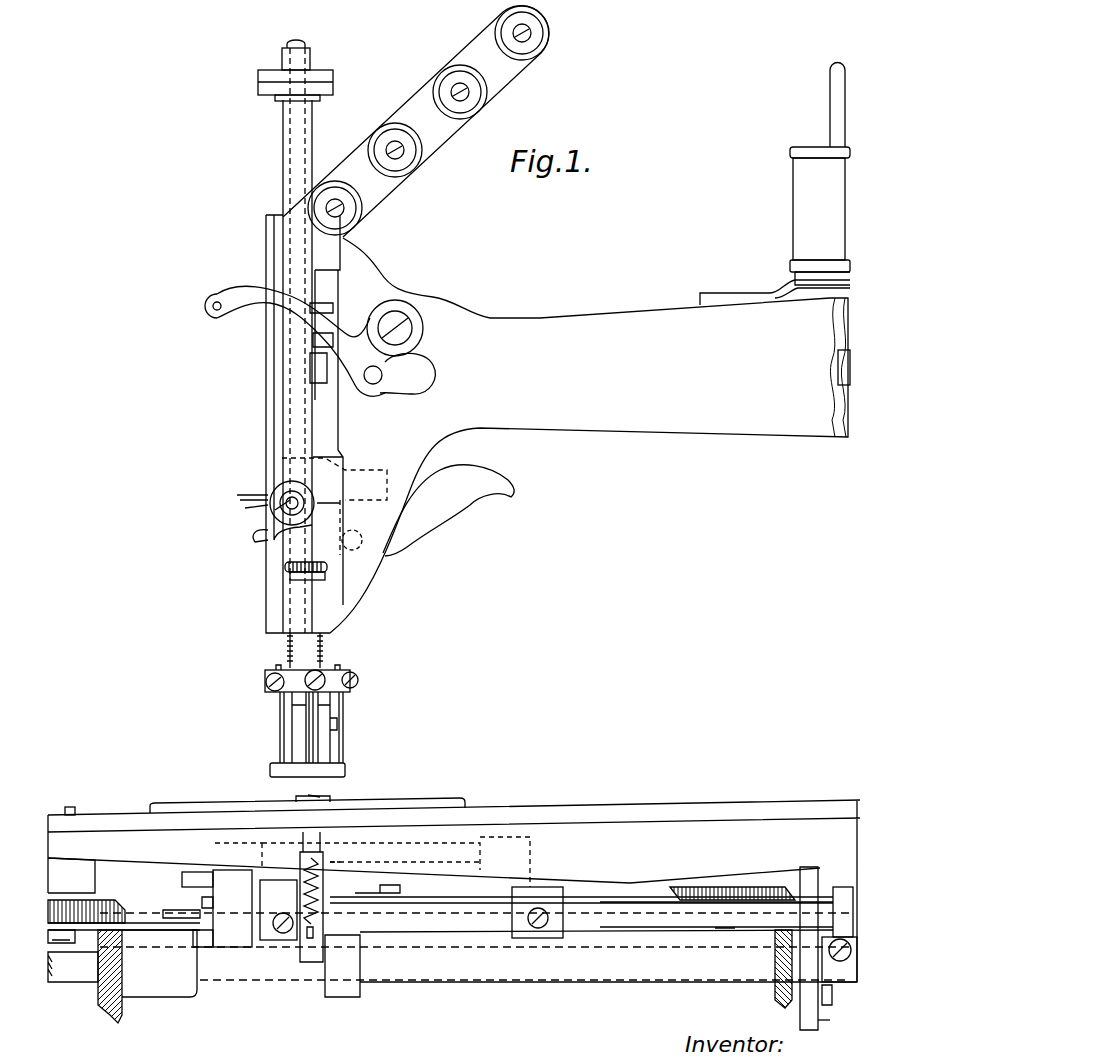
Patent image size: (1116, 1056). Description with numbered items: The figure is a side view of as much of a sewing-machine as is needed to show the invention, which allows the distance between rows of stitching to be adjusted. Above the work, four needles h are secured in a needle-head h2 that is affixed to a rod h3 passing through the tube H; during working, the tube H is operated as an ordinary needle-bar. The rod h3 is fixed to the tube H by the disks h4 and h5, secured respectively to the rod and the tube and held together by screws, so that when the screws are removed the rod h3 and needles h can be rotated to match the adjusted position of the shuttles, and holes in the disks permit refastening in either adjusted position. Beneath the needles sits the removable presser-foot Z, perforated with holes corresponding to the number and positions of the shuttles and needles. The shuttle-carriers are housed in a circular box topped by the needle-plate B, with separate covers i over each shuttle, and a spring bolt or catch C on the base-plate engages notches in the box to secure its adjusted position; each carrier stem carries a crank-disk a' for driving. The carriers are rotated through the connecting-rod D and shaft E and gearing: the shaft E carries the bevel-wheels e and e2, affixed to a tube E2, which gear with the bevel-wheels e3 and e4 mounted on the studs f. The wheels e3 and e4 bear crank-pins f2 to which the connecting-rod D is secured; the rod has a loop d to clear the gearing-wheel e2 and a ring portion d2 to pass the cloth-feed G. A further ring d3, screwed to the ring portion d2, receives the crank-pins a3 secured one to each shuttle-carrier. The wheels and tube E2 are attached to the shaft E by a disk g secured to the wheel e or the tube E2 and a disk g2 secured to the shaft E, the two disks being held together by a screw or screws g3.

The tube H is at (310, 140).
The rod h3 is at (304, 44).
The disk h4 is at (333, 76).
The disk h5 is at (278, 98).
The needle-head h2 is at (350, 672).
The needles h is at (305, 727).
The presser-foot Z is at (345, 767).
The spring bolt or catch C is at (70, 807).
The covers i is at (307, 795).
The needle-plate B is at (350, 810).
The cloth-feed G is at (306, 873).
The studs f is at (752, 870).
The bevel-wheel e4 is at (100, 902).
The loop d is at (100, 910).
The connecting-rod D is at (150, 923).
The crank-pins f2 is at (70, 938).
The shaft E is at (645, 978).
The tube E2 is at (538, 980).
The bevel-wheel e2 is at (122, 1018).
The crank-disk a' is at (287, 900).
The ring portion d2 is at (175, 906).
The crank-pins a3 is at (372, 862).
The ring d3 is at (402, 896).
The bevel-wheel e3 is at (700, 887).
The bevel-wheel e is at (782, 1000).
The disk g is at (828, 948).
The screw g3 is at (832, 998).
The disk g2 is at (820, 1022).